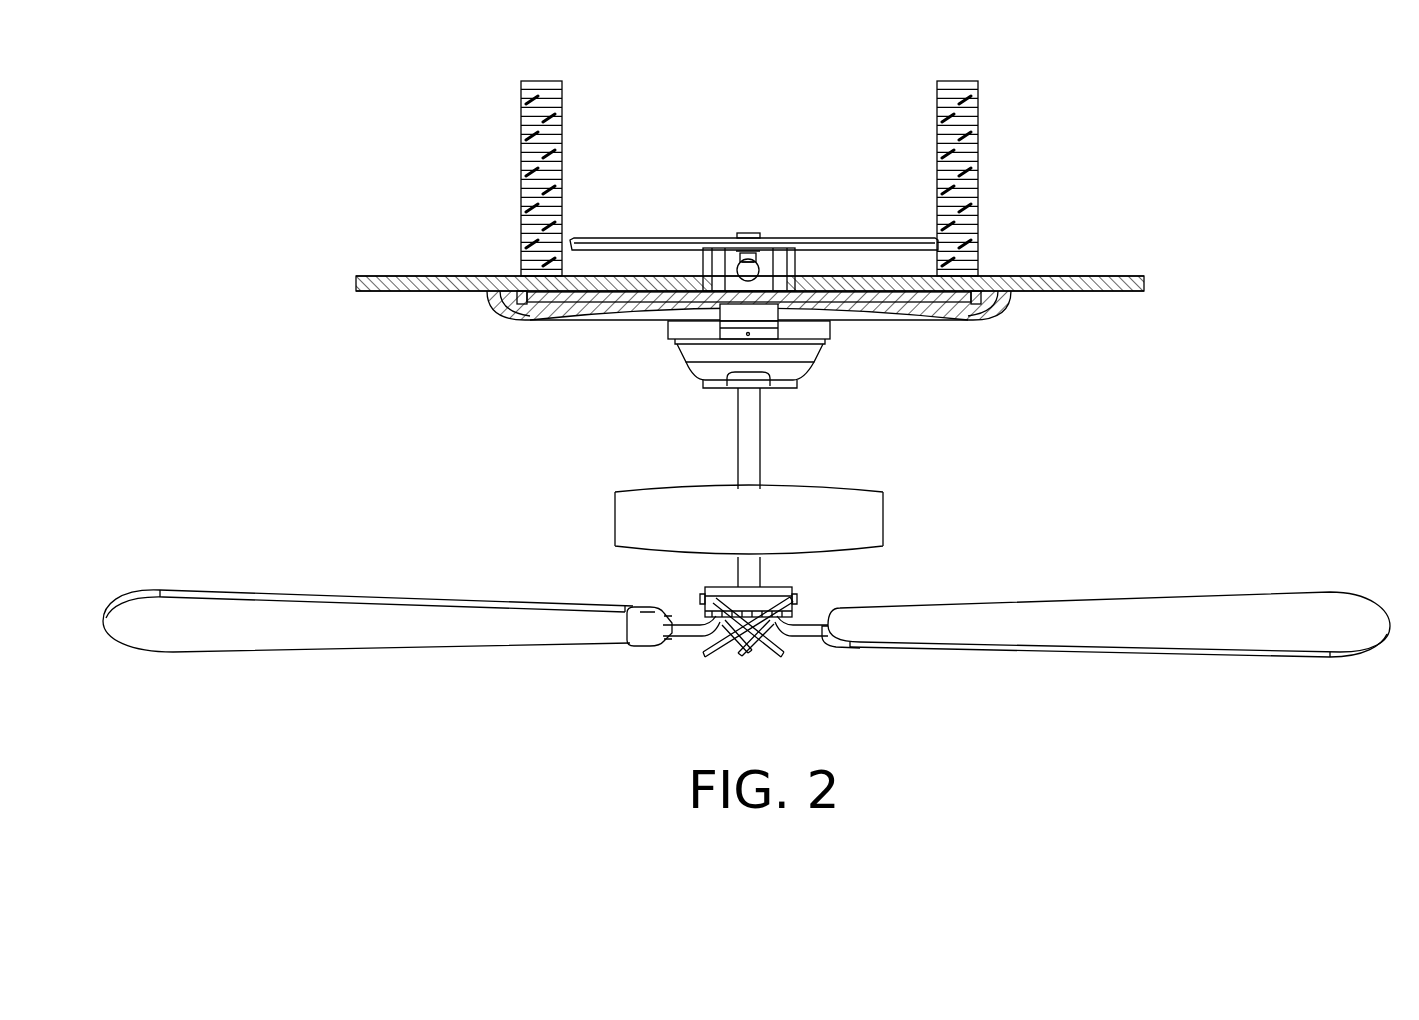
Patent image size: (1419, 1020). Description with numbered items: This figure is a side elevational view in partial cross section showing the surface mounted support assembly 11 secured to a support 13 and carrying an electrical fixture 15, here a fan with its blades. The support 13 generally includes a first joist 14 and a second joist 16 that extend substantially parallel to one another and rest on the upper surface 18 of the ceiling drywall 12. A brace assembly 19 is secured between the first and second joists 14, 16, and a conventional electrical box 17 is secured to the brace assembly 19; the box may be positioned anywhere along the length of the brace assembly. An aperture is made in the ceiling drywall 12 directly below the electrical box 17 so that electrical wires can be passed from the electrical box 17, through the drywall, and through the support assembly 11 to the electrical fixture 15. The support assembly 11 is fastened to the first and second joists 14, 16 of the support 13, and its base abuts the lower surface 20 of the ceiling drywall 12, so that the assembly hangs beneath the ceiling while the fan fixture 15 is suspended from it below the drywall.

The surface mounted support assembly 11 is at (626, 367).
The ceiling drywall 12 is at (1126, 276).
The support 13 is at (467, 243).
The first joist 14 is at (562, 116).
The electrical fixture 15 is at (507, 652).
The second joist 16 is at (937, 116).
The electrical box 17 is at (797, 263).
The upper surface 18 is at (1081, 361).
The brace assembly 19 is at (672, 236).
The lower surface 20 is at (750, 347).